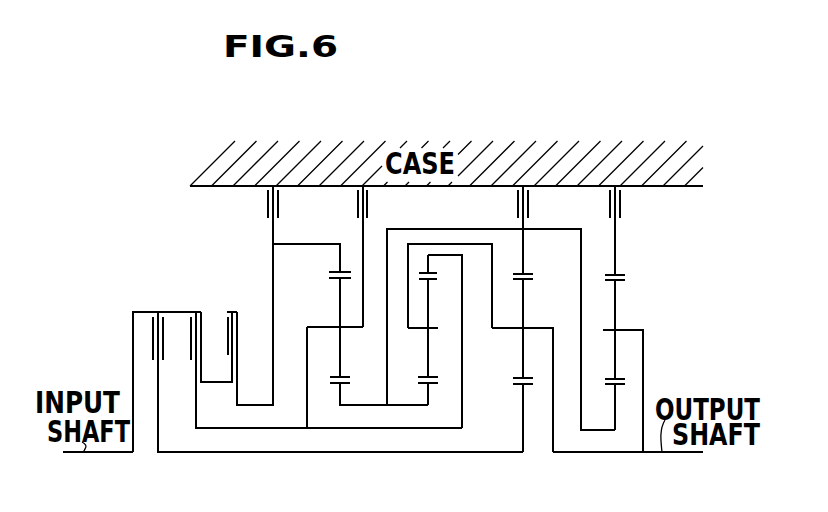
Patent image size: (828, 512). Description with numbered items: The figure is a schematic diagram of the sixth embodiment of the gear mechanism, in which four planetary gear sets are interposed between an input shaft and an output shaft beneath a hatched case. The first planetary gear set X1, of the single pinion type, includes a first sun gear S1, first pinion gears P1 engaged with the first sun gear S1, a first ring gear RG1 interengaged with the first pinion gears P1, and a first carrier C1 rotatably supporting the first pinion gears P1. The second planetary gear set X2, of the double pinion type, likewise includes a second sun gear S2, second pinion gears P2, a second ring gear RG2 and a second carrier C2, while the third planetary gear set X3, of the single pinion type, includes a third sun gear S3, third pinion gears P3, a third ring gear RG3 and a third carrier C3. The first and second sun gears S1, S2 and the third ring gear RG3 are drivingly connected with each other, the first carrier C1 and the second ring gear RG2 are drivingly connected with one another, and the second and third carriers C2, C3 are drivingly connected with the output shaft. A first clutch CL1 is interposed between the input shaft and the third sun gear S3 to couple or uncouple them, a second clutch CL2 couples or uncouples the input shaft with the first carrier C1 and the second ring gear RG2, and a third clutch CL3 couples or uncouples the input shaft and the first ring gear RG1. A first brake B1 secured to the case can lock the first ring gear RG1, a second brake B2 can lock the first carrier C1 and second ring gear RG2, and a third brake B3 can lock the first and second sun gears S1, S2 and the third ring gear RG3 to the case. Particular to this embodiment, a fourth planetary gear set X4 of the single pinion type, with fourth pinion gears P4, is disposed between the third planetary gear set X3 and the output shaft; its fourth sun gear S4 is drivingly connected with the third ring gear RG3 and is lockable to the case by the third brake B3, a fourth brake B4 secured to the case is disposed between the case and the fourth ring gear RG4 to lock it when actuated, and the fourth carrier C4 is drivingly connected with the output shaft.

The first clutch CL1 is at (167, 365).
The second clutch CL2 is at (198, 310).
The third clutch CL3 is at (242, 316).
The first brake B1 is at (256, 205).
The second brake B2 is at (379, 256).
The third brake B3 is at (540, 206).
The fourth brake B4 is at (631, 205).
The first ring gear RG1 is at (340, 260).
The second ring gear RG2 is at (429, 262).
The third ring gear RG3 is at (523, 258).
The fourth ring gear RG4 is at (615, 258).
The first carrier C1 is at (328, 327).
The second carrier C2 is at (427, 341).
The third carrier C3 is at (525, 328).
The fourth carrier C4 is at (618, 330).
The first pinion gears P1 is at (340, 357).
The second pinion gears P2 is at (427, 379).
The third pinion gears P3 is at (523, 355).
The fourth pinion gears P4 is at (615, 358).
The first sun gear S1 is at (348, 397).
The second sun gear S2 is at (437, 397).
The third sun gear S3 is at (523, 397).
The fourth sun gear S4 is at (615, 398).
The first planetary gear set X1 is at (329, 397).
The second planetary gear set X2 is at (420, 397).
The third planetary gear set X3 is at (515, 394).
The fourth planetary gear set X4 is at (607, 397).